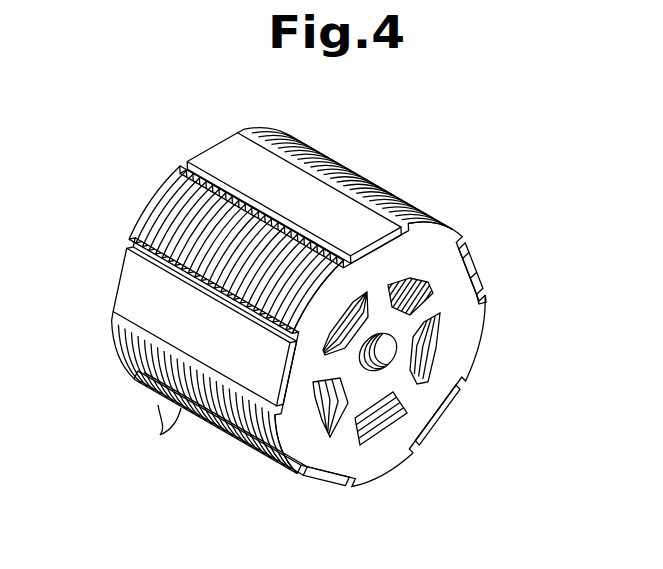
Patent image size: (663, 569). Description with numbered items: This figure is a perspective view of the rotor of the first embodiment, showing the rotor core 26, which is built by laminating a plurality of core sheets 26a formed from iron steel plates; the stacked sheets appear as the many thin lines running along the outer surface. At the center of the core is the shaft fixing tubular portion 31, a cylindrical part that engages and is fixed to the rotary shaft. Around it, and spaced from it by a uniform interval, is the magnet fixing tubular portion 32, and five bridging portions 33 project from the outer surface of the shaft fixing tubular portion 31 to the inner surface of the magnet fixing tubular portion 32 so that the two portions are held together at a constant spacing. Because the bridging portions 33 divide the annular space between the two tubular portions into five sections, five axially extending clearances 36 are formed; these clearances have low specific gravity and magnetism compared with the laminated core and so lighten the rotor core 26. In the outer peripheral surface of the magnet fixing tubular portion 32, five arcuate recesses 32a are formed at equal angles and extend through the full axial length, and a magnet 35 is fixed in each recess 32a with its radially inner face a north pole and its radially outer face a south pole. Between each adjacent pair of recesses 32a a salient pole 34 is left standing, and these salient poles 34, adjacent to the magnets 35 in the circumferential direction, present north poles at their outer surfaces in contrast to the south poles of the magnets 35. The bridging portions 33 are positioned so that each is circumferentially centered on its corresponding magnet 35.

The rotor core 26 is at (438, 389).
The core sheet 26a is at (166, 410).
The shaft fixing tubular portion 31 is at (363, 343).
The magnet fixing tubular portion 32 is at (474, 259).
The arcuate recess 32a is at (478, 283).
The bridging portion 33 is at (430, 307).
The salient pole 34 is at (160, 208).
The magnet 35 is at (214, 150).
The clearance 36 is at (368, 422).